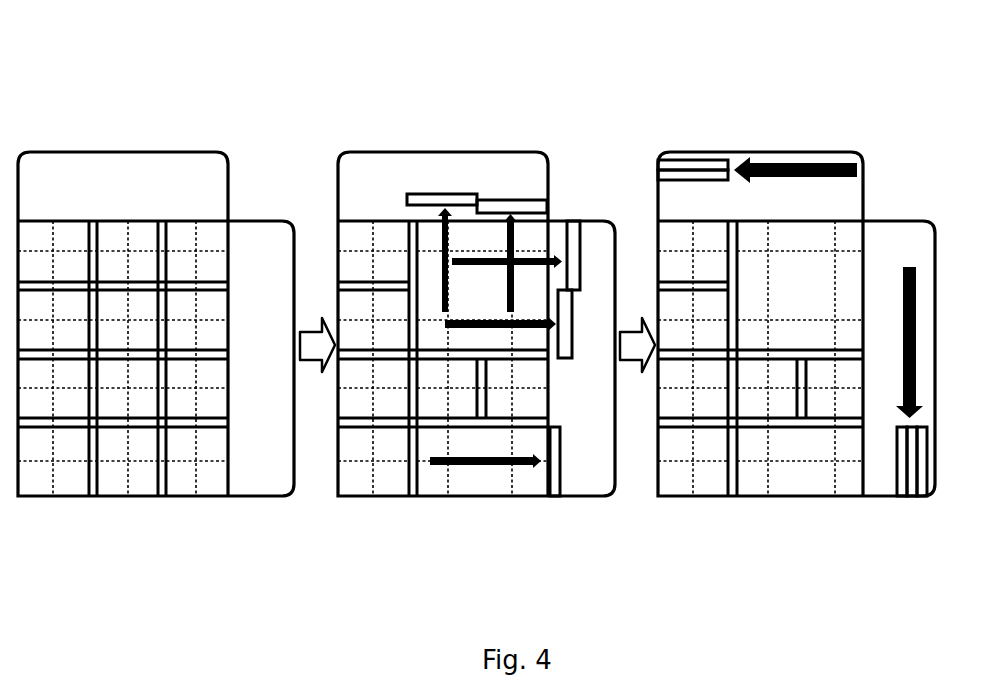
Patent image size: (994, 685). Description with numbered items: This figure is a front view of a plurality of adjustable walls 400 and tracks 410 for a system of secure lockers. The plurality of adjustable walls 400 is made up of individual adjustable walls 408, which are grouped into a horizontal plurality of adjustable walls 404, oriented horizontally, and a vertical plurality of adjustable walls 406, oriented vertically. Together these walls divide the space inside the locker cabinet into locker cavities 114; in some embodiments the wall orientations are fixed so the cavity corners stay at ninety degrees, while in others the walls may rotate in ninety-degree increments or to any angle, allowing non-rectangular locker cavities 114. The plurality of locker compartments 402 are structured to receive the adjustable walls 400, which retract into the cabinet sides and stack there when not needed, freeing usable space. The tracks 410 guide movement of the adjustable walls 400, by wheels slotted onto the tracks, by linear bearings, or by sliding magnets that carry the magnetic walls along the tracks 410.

The plurality of adjustable walls 400 is at (69, 126).
The plurality of locker compartments 402 is at (242, 220).
The horizontal plurality of adjustable walls 404 is at (513, 207).
The vertical plurality of adjustable walls 406 is at (555, 463).
The adjustable wall 408 is at (98, 496).
The tracks 410 is at (207, 317).
The locker cavities 114 is at (848, 242).